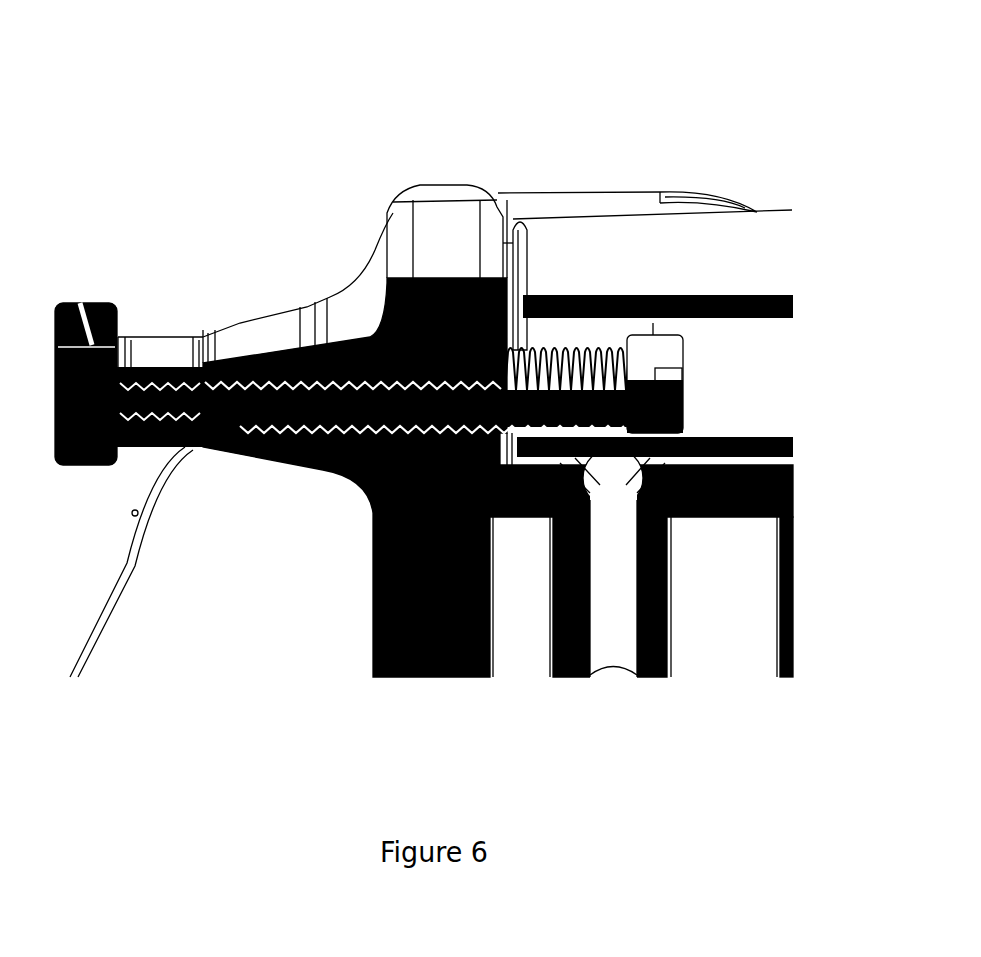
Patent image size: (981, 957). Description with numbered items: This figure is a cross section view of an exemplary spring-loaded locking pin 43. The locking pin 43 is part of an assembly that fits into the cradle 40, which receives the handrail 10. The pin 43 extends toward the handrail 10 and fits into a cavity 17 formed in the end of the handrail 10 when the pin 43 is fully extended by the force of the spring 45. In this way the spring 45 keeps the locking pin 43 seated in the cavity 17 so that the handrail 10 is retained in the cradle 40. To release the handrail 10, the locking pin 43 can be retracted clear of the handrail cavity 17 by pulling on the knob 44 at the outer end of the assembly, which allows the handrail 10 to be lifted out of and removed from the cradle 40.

The knob 44 is at (87, 303).
The cradle 40 is at (393, 218).
The spring 45 is at (567, 360).
The locking pin 43 is at (647, 352).
The handrail 10 is at (650, 233).
The cavity 17 is at (740, 373).